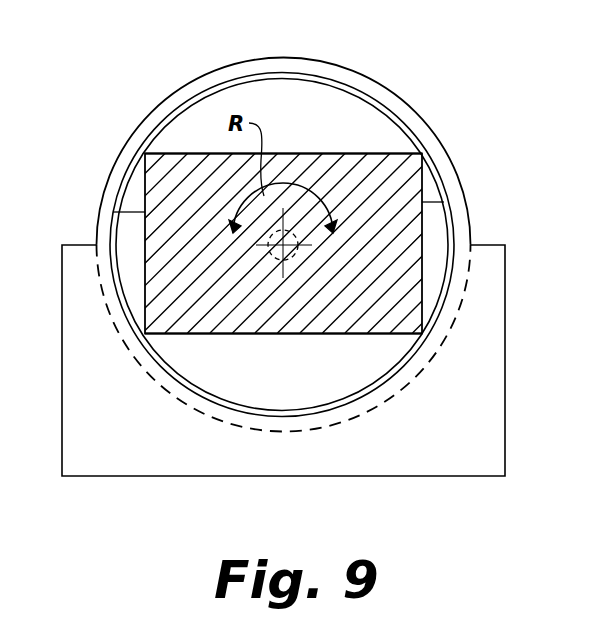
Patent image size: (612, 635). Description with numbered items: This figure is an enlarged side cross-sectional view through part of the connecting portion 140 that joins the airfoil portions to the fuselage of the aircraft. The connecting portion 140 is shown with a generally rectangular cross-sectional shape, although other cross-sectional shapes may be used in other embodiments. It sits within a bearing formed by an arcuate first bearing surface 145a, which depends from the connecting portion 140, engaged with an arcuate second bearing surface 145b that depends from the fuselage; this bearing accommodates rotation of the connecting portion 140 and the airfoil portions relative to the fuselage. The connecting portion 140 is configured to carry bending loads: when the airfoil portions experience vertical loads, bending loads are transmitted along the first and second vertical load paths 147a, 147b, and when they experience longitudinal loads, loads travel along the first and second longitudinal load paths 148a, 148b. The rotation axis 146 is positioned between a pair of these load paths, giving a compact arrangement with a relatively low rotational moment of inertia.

The connecting portion 140 is at (407, 236).
The first bearing surface 145a is at (197, 72).
The second bearing surface 145b is at (122, 342).
The rotation axis 146 is at (291, 255).
The first vertical load path 147a is at (358, 154).
The second vertical load path 147b is at (330, 334).
The first longitudinal load path 148a is at (447, 200).
The second longitudinal load path 148b is at (122, 212).